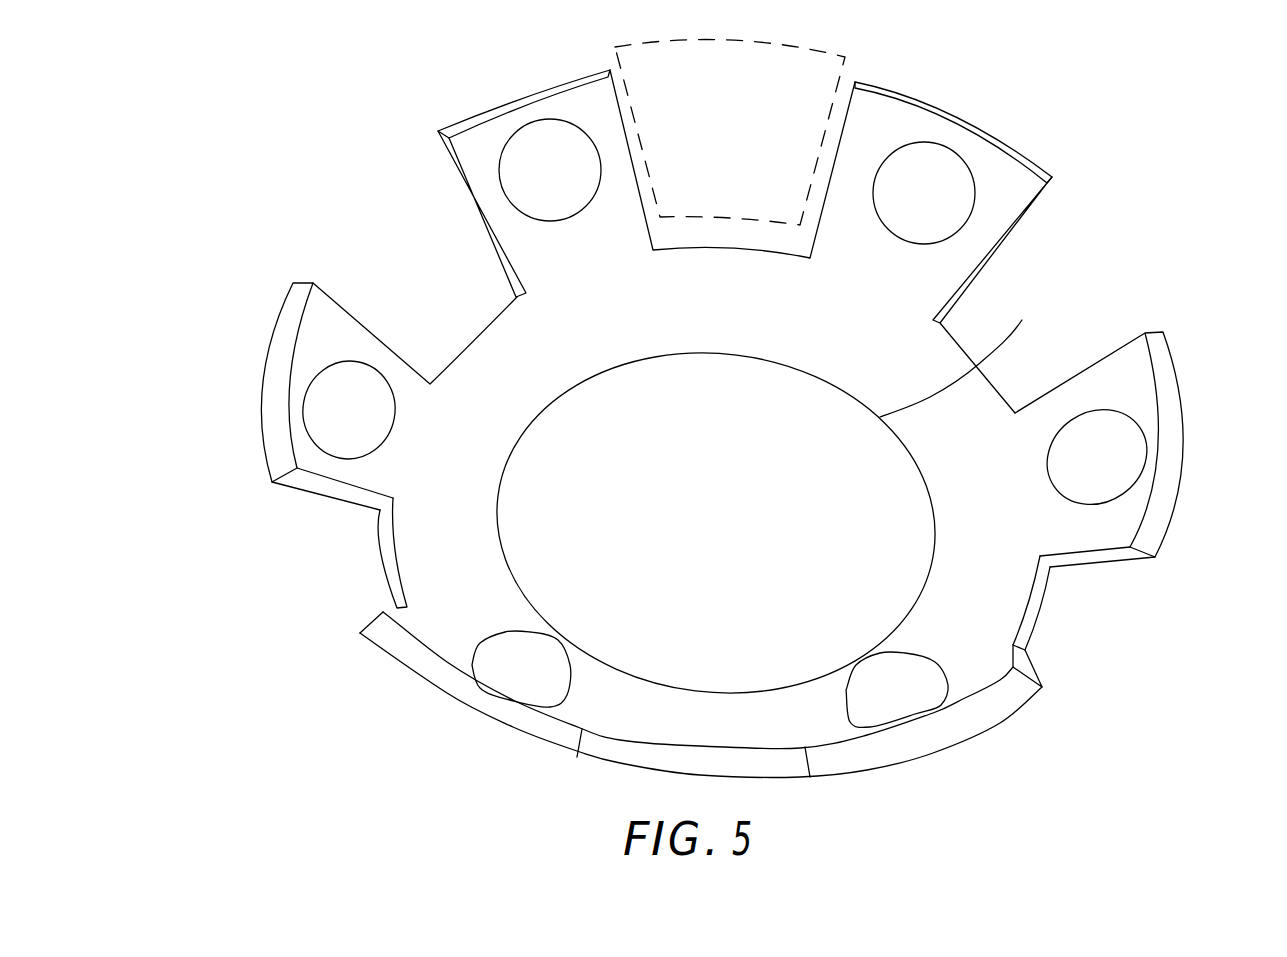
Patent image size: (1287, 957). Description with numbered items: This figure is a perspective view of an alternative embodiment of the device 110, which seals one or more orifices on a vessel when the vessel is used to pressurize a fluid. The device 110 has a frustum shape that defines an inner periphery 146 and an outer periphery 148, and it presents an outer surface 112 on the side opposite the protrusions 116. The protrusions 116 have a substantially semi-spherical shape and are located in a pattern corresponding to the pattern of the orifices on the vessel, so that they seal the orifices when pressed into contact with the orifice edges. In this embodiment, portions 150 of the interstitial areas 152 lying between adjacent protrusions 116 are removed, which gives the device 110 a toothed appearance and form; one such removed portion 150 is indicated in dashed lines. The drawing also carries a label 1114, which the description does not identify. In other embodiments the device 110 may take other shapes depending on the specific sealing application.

The device 110 is at (225, 145).
The outer surface 112 is at (388, 658).
The protrusions 116 is at (500, 668).
The inner periphery 146 is at (1022, 320).
The outer periphery 148 is at (1167, 390).
The portions 150 is at (778, 63).
The interstitial areas 152 is at (898, 118).
The tab 1114 is at (322, 337).